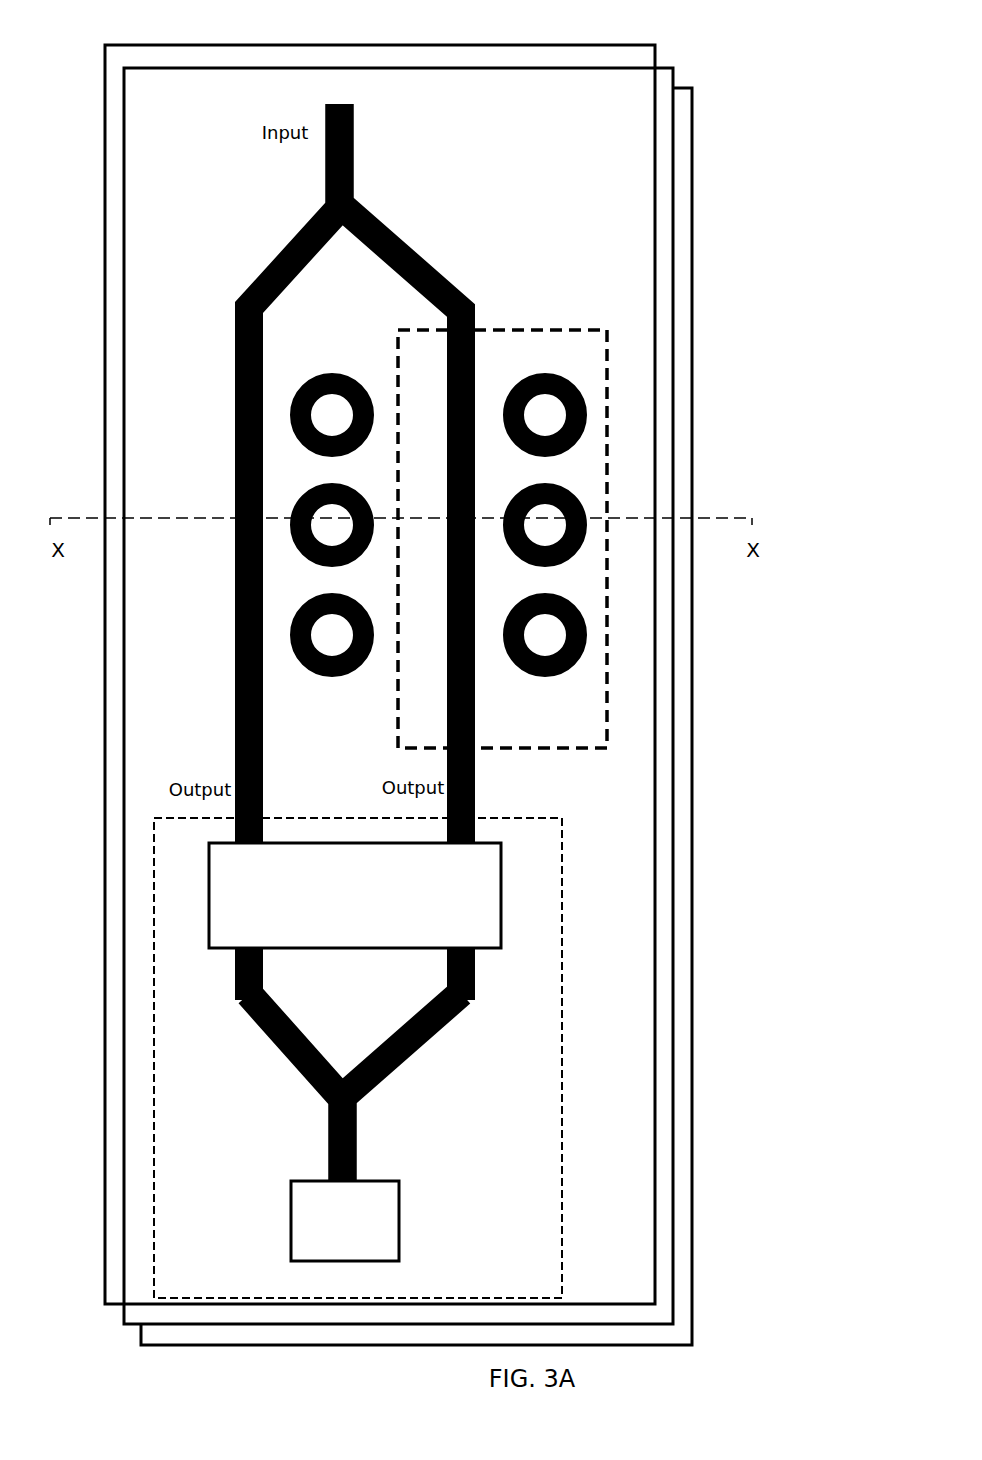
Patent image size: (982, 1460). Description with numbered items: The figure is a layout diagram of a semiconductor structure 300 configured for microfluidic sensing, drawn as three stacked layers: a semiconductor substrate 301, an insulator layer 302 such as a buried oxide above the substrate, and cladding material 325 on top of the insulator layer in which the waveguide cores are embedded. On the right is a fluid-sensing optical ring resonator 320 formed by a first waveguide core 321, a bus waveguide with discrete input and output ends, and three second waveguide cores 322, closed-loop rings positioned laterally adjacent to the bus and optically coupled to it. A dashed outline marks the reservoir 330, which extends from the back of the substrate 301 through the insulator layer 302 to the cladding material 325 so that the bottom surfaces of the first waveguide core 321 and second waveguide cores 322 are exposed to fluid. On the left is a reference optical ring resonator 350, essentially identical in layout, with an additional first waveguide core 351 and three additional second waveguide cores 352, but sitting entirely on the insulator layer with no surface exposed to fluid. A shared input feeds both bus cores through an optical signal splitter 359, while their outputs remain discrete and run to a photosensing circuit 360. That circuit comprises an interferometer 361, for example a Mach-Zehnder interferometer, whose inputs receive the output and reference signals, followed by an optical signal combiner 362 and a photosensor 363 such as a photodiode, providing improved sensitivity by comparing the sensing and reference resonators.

The semiconductor structure 300 is at (442, 679).
The semiconductor substrate 301 is at (691, 228).
The insulator layer 302 is at (673, 190).
The cladding material 325 is at (656, 152).
The fluid-sensing optical ring resonator 320 is at (579, 599).
The first waveguide core 321 is at (475, 680).
The second waveguide cores 322 is at (587, 415).
The reservoir 330 is at (607, 383).
The reference optical ring resonator 350 is at (255, 552).
The additional first waveguide core 351 is at (235, 617).
The additional second waveguide cores 352 is at (290, 416).
The optical signal splitter 359 is at (352, 196).
The photosensing circuit 360 is at (452, 1058).
The interferometer 361 is at (345, 908).
The optical signal combiner 362 is at (342, 1080).
The photosensor 363 is at (327, 1232).